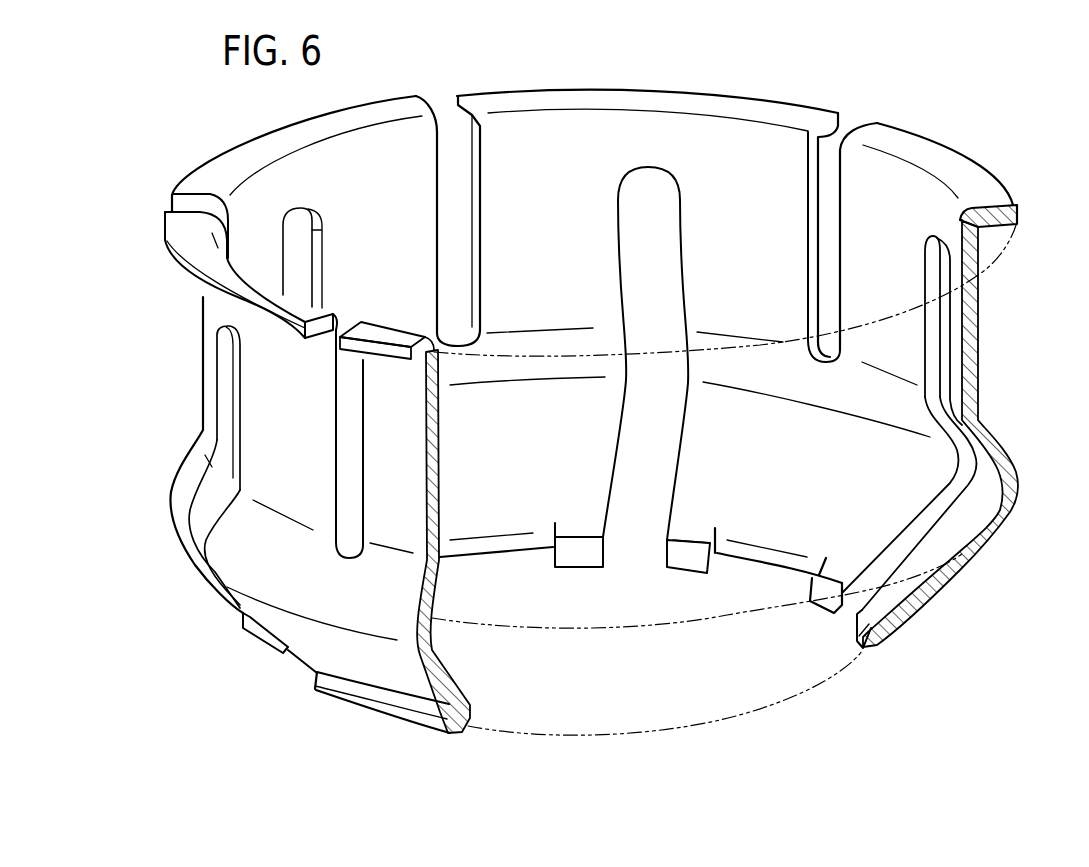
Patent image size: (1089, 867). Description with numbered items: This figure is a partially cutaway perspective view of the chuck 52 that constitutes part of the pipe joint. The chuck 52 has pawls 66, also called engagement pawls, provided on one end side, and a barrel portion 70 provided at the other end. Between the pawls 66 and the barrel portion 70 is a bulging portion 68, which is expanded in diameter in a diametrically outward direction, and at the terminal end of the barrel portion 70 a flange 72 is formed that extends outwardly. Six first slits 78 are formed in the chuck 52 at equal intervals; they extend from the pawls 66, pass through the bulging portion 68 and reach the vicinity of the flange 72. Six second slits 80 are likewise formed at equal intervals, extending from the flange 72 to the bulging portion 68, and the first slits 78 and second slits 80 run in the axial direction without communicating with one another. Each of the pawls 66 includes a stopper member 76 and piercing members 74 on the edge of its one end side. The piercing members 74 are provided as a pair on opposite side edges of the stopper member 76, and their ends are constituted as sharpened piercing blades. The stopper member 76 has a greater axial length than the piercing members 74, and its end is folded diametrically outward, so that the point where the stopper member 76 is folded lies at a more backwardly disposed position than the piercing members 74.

The chuck 52 is at (926, 43).
The pawls 66 is at (398, 668).
The bulging portion 68 is at (403, 577).
The barrel portion 70 is at (435, 453).
The flange 72 is at (985, 172).
The piercing members 74 is at (692, 553).
The stopper member 76 is at (362, 707).
The first slits 78 is at (652, 475).
The second slits 80 is at (823, 202).